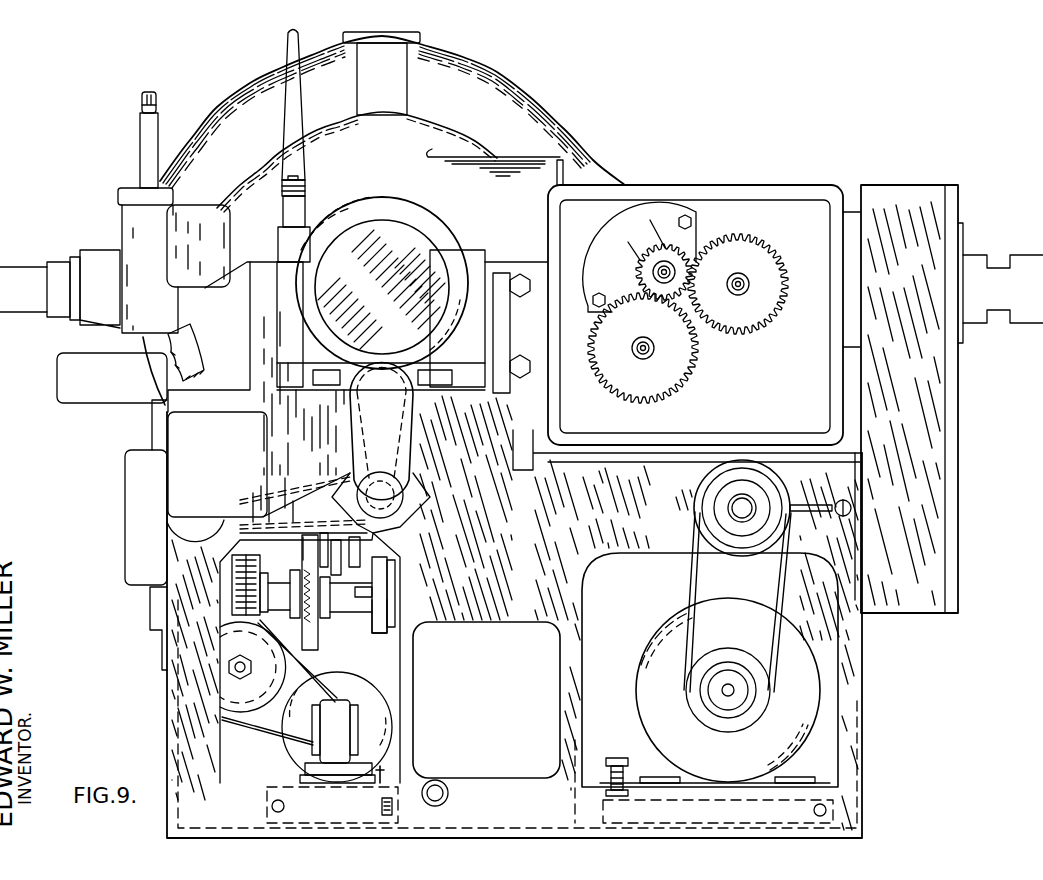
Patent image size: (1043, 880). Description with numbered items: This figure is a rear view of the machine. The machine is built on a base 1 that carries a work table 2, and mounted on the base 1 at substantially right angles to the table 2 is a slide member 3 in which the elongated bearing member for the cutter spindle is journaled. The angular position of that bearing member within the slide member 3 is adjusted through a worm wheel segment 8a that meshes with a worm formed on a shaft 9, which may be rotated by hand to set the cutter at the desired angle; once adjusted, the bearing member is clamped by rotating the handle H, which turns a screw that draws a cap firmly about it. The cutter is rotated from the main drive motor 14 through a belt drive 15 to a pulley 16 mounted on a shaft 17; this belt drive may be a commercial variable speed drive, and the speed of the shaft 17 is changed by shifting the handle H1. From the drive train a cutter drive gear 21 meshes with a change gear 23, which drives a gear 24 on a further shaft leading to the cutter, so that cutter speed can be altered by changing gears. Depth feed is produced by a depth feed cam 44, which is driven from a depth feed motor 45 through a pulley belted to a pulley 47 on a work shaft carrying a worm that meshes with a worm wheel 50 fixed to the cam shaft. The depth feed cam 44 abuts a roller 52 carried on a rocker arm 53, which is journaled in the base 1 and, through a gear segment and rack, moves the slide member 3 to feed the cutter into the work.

The base 1 is at (853, 660).
The work table 2 is at (80, 400).
The slide member 3 is at (522, 123).
The worm wheel segment 8a is at (187, 353).
The shaft 9 is at (145, 130).
The handle H is at (287, 43).
The handle H1 is at (830, 490).
The main drive motor 14 is at (652, 652).
The belt drive 15 is at (778, 600).
The pulley 16 is at (773, 481).
The shaft 17 is at (742, 508).
The cutter drive gear 21 is at (767, 252).
The change gear 23 is at (650, 270).
The gear 24 is at (686, 360).
The depth feed cam 44 is at (383, 607).
The depth feed motor 45 is at (353, 690).
The pulley 47 is at (247, 710).
The worm wheel 50 is at (235, 585).
The roller 52 is at (381, 585).
The rocker arm 53 is at (393, 563).